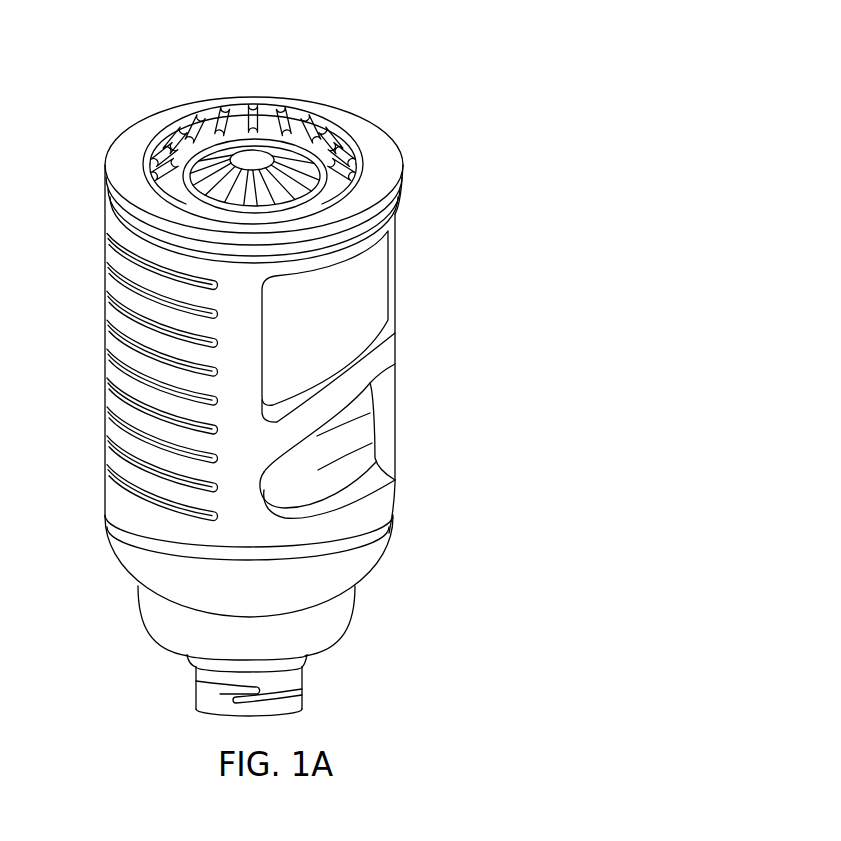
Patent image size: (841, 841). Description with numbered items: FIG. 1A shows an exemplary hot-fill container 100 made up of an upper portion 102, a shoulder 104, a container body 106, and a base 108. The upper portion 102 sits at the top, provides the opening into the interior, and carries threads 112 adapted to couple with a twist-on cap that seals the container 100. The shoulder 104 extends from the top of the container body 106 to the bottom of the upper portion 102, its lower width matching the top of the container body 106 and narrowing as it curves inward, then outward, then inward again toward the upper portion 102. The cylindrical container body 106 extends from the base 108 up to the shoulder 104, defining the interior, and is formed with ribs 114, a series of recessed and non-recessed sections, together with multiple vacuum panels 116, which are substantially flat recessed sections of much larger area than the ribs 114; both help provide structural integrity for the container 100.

The container 100 is at (490, 141).
The upper portion 102 is at (315, 687).
The shoulder 104 is at (365, 585).
The container body 106 is at (101, 321).
The base 108 is at (182, 78).
The threads 112 is at (197, 686).
The ribs 114 is at (108, 452).
The vacuum panels 116 is at (378, 283).